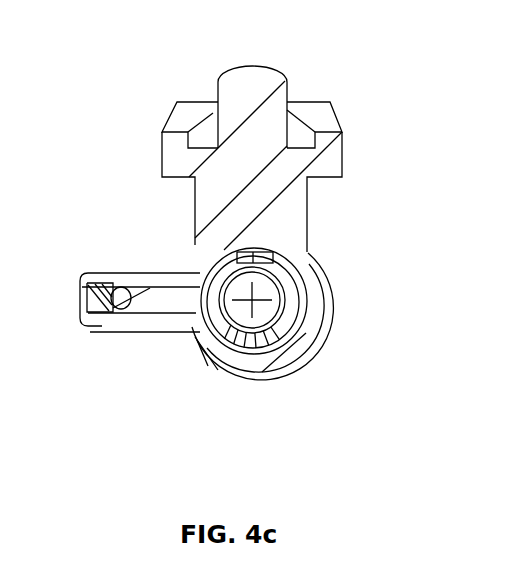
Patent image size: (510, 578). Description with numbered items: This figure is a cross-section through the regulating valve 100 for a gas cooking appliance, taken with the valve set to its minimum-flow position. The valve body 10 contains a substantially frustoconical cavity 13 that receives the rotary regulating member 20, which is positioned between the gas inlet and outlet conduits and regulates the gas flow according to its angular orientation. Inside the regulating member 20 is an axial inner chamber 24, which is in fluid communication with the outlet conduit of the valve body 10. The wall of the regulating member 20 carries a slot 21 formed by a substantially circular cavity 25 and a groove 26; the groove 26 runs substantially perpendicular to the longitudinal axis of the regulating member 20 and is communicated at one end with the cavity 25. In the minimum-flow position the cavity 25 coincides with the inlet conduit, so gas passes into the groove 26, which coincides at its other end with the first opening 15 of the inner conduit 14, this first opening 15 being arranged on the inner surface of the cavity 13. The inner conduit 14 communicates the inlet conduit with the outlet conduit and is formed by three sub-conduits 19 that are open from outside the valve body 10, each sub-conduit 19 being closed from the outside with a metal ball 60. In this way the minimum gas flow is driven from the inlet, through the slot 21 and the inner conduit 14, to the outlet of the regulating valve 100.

The regulating valve 100 is at (314, 70).
The valve body 10 is at (160, 128).
The cavity 13 is at (295, 328).
The inner conduit 14 is at (174, 309).
The first opening 15 is at (207, 313).
The sub-conduits 19 is at (178, 292).
The rotary regulating member 20 is at (212, 290).
The slot 21 is at (234, 261).
The axial inner chamber 24 is at (240, 316).
The cavity 25 is at (271, 253).
The groove 26 is at (232, 260).
The metal ball 60 is at (102, 302).